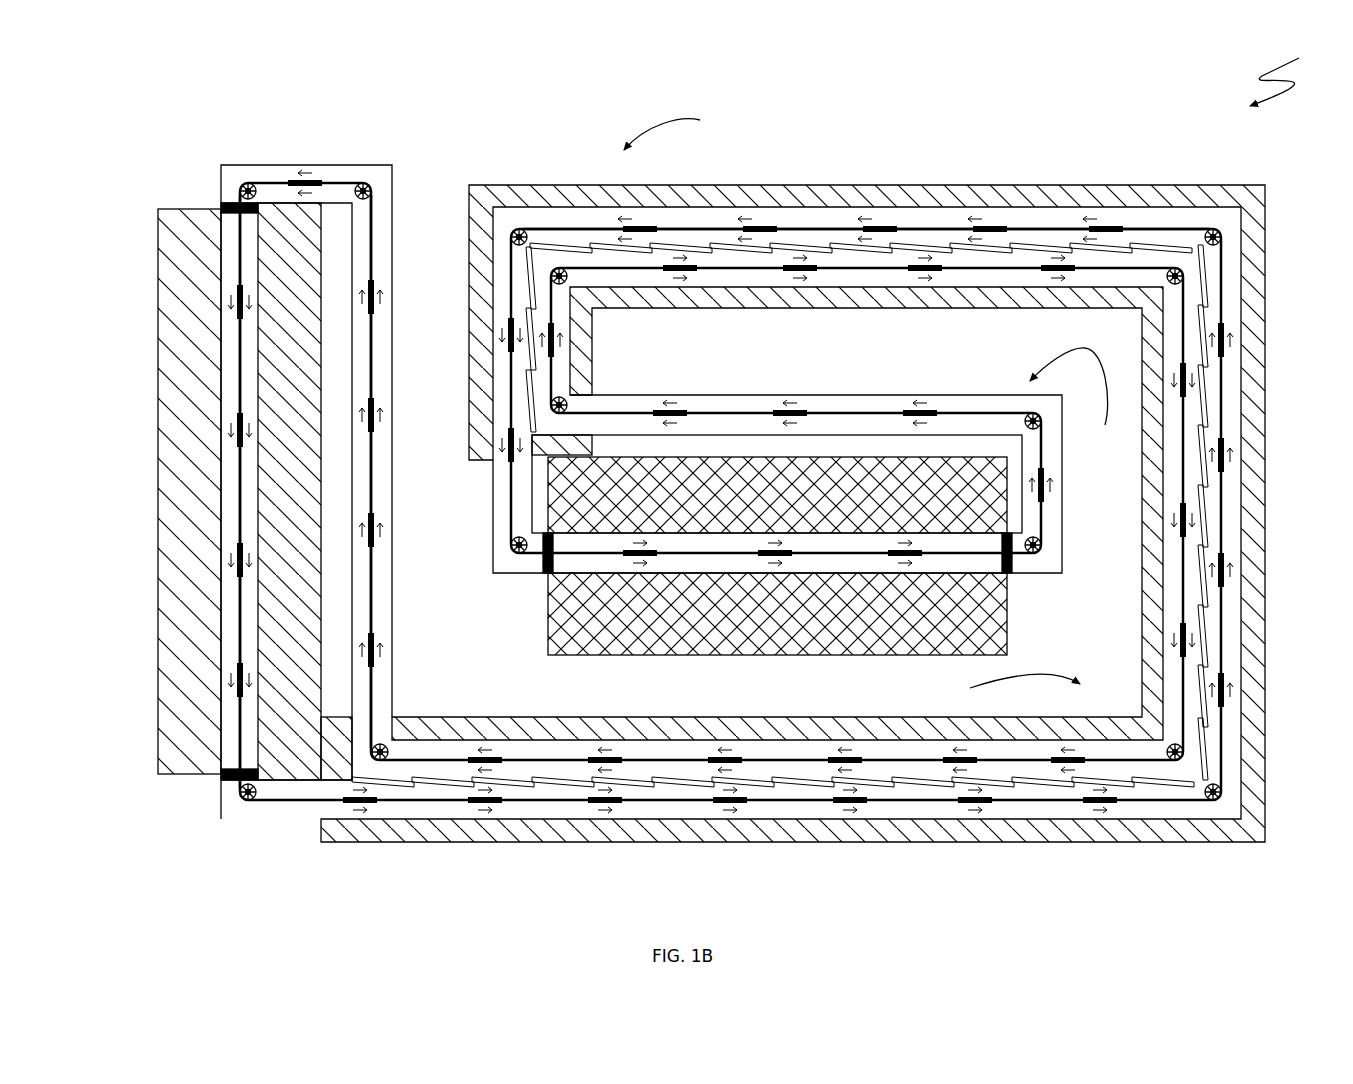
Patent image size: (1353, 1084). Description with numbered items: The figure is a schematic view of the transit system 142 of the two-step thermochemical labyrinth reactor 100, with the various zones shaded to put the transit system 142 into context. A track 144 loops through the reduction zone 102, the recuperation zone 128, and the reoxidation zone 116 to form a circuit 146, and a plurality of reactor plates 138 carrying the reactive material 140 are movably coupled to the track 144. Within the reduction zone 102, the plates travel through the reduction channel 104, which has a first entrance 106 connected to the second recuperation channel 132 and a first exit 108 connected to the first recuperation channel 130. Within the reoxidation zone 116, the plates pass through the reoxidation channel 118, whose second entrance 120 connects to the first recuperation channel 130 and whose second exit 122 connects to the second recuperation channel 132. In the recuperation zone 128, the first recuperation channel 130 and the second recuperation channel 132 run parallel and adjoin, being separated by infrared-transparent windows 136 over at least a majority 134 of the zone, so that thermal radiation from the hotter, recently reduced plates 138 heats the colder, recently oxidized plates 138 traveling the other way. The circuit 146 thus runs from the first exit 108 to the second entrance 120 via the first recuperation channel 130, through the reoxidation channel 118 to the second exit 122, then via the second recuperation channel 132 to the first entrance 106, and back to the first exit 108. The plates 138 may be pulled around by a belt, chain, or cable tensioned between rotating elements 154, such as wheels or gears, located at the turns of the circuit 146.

The labyrinth reactor 100 is at (1299, 73).
The reduction zone 102 is at (548, 618).
The reduction channel 104 is at (728, 562).
The first entrance 106 is at (545, 532).
The first exit 108 is at (1012, 568).
The reoxidation zone 116 is at (157, 368).
The reoxidation channel 118 is at (235, 495).
The second entrance 120 is at (225, 205).
The second exit 122 is at (230, 778).
The recuperation zone 128 is at (862, 843).
The first recuperation channel 130 is at (560, 302).
The second recuperation channel 132 is at (502, 295).
The majority of the recuperation zone 134 is at (1005, 687).
The windows 136 is at (1143, 783).
The reactor plates 138 is at (888, 228).
The reactive material 140 is at (992, 228).
The transit system 142 is at (684, 129).
The track 144 is at (845, 412).
The circuit 146 is at (1077, 397).
The rotating elements 154 is at (355, 190).